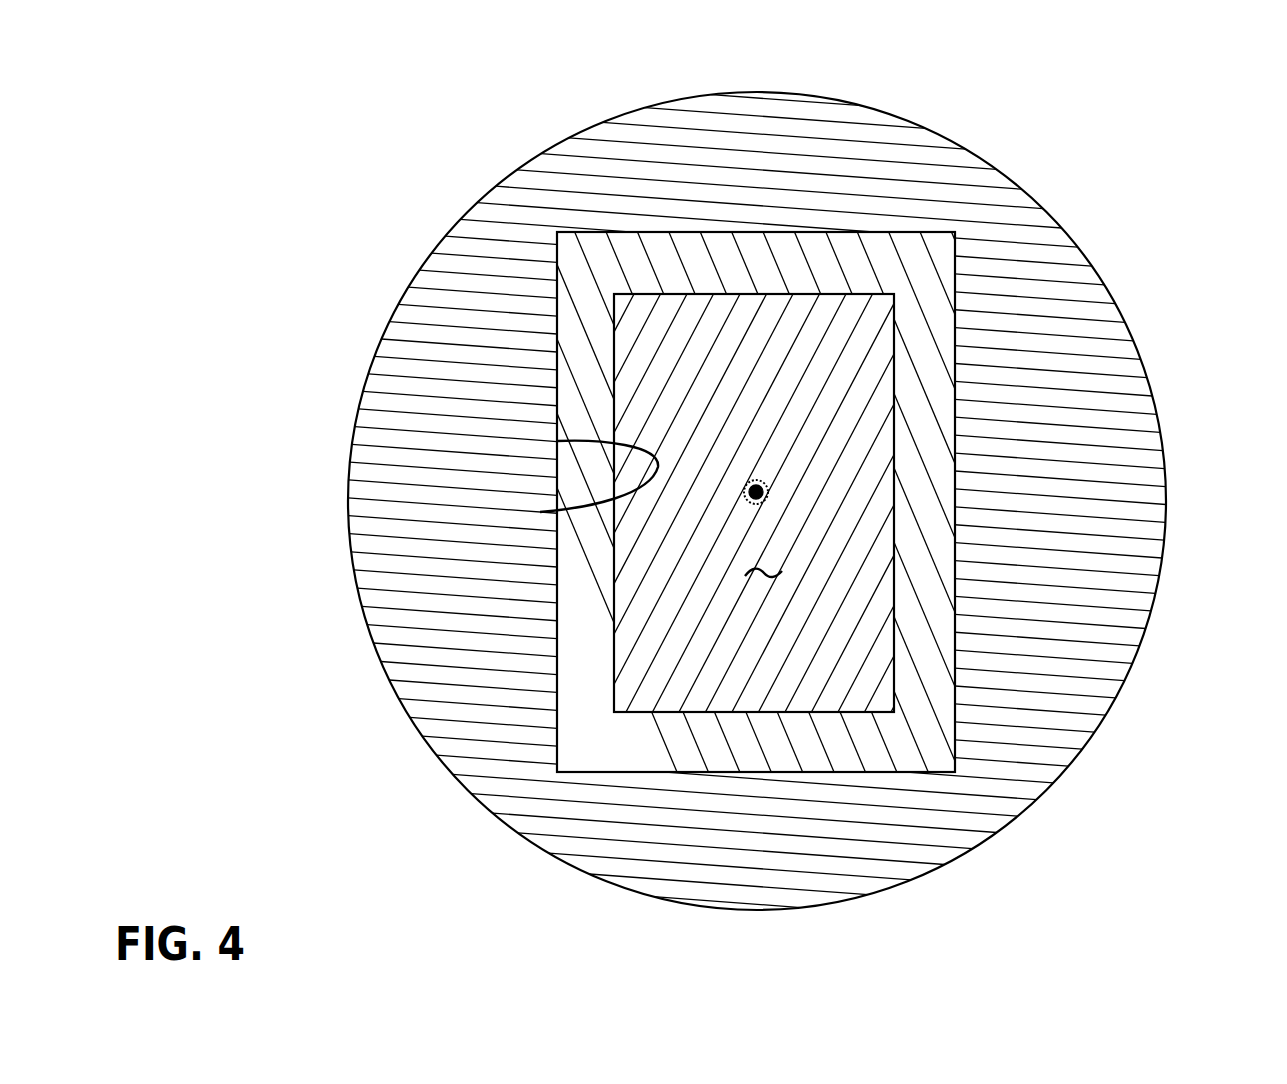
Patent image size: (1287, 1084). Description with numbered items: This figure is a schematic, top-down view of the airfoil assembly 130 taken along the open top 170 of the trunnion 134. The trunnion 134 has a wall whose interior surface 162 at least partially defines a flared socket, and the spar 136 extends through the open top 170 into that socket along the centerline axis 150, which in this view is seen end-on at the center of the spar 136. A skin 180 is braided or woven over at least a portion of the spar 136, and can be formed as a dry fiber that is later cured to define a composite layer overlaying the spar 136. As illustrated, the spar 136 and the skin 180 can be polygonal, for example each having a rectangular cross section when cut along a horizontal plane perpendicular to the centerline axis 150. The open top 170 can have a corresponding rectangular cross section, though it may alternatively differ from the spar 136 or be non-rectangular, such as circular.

The cable assembly 130 is at (406, 156).
The trunnion 134 is at (1150, 384).
The spar 136 is at (838, 293).
The centerline axis 150 is at (766, 496).
The interior surface 162 is at (540, 512).
The open top 170 is at (745, 576).
The skin 180 is at (955, 300).